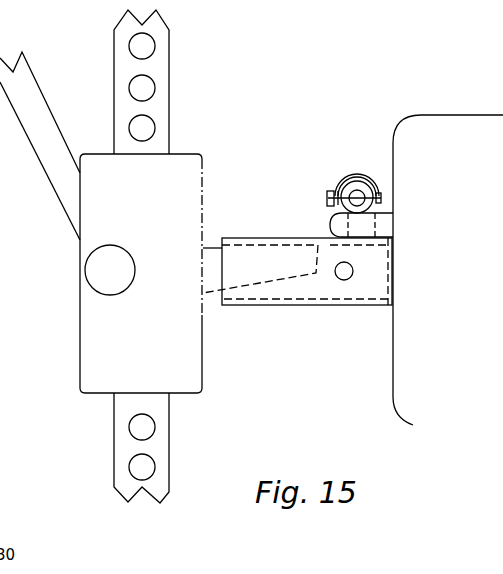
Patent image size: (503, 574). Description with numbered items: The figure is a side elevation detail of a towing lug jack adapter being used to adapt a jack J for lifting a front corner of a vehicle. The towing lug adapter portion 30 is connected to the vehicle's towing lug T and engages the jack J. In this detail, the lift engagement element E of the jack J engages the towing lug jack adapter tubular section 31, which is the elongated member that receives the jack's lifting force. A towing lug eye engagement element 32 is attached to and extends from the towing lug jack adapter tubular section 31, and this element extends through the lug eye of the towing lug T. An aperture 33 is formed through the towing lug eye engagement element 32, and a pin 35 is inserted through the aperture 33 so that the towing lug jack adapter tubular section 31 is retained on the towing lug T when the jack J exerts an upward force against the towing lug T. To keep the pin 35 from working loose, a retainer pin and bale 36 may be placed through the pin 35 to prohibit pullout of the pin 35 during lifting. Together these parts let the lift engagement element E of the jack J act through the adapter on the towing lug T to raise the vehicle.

The jack J is at (168, 72).
The lift engagement element E is at (207, 252).
The towing lug T is at (338, 226).
The towing lug adapter portion 30 is at (328, 285).
The towing lug jack adapter tubular section 31 is at (322, 306).
The towing lug eye engagement element 32 is at (346, 172).
The aperture 33 is at (381, 201).
The pin 35 is at (365, 187).
The retainer pin and bale 36 is at (327, 190).